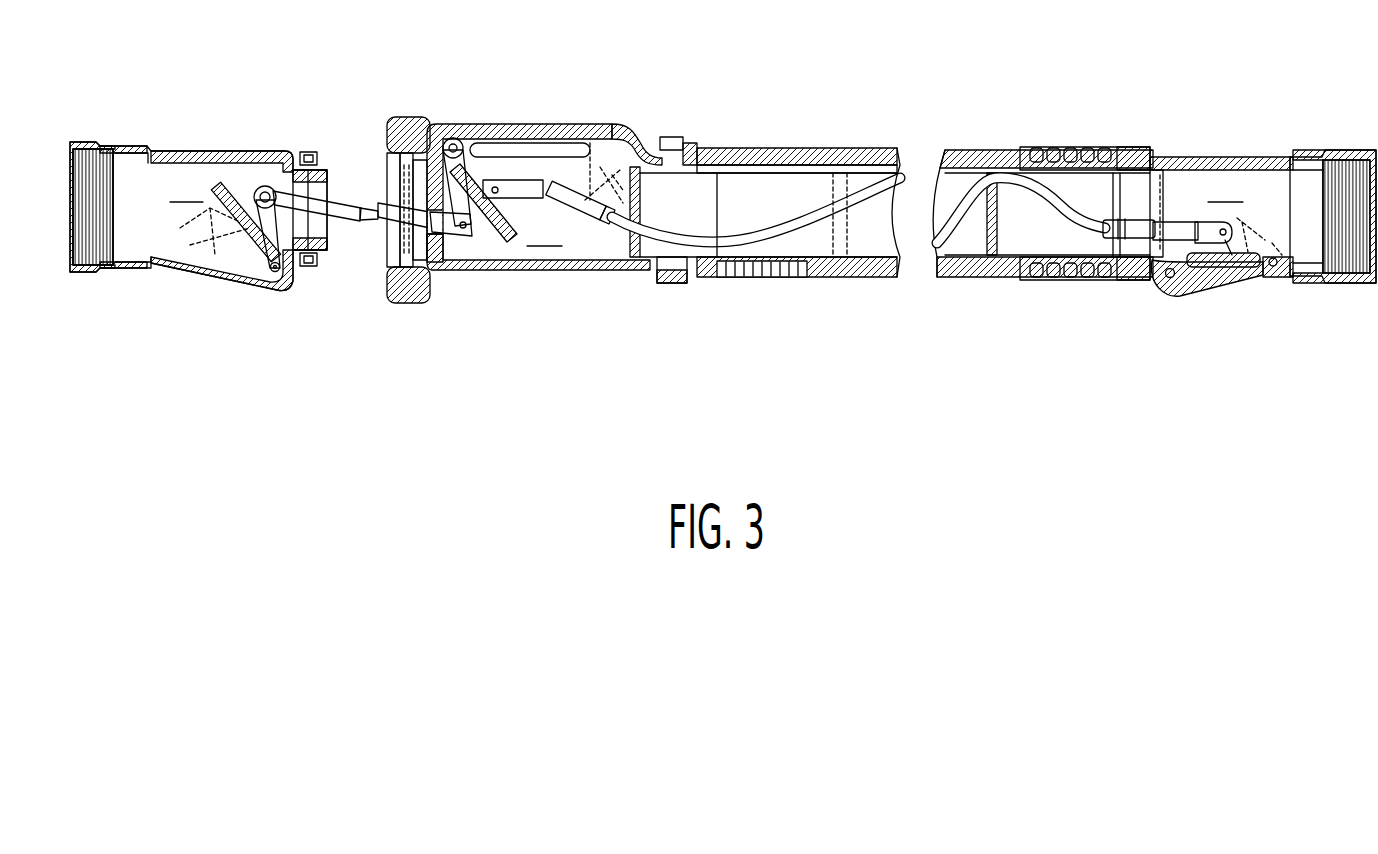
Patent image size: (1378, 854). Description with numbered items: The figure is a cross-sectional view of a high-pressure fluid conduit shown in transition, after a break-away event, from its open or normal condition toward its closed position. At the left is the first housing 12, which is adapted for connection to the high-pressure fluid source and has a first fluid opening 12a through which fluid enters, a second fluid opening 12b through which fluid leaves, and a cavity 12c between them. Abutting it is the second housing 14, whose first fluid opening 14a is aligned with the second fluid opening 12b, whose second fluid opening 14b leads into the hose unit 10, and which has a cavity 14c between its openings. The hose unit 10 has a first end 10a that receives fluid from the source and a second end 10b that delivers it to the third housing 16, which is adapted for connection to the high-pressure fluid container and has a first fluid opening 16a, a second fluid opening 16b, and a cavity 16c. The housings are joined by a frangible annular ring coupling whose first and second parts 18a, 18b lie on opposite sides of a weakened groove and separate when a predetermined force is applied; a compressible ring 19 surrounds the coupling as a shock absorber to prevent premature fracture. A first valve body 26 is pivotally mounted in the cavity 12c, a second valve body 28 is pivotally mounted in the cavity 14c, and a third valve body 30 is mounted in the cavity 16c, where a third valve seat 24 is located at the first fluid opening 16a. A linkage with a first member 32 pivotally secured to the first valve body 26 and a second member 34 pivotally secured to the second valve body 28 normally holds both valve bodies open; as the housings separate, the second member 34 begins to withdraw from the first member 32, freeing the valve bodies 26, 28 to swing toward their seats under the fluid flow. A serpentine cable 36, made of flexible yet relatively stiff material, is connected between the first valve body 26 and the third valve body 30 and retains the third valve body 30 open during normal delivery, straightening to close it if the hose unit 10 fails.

The hose unit 10 is at (963, 150).
The first end of hose unit 10a is at (707, 148).
The second end of hose unit 10b is at (1088, 147).
The first housing 12 is at (228, 150).
The first fluid opening of first housing 12a is at (165, 253).
The second fluid opening of first housing 12b is at (275, 272).
The cavity of first housing 12c is at (210, 214).
The second housing 14 is at (527, 124).
The first fluid opening of second housing 14a is at (445, 242).
The second fluid opening of second housing 14b is at (612, 125).
The cavity of second housing 14c is at (544, 232).
The third housing 16 is at (1228, 275).
The first fluid opening of third housing 16a is at (1167, 193).
The second fluid opening of third housing 16b is at (1280, 187).
The cavity of third housing 16c is at (1225, 188).
The first part of annular ring 18a is at (316, 150).
The second part of annular ring 18b is at (402, 118).
The compressible ring 19 is at (405, 303).
The third valve seat 24 is at (1150, 262).
The first valve body 26 is at (235, 238).
The second valve body 28 is at (482, 125).
The third valve body 30 is at (1257, 277).
The first member of linkage 32 is at (340, 216).
The second member of linkage 34 is at (378, 222).
The serpentine cable 36 is at (810, 210).